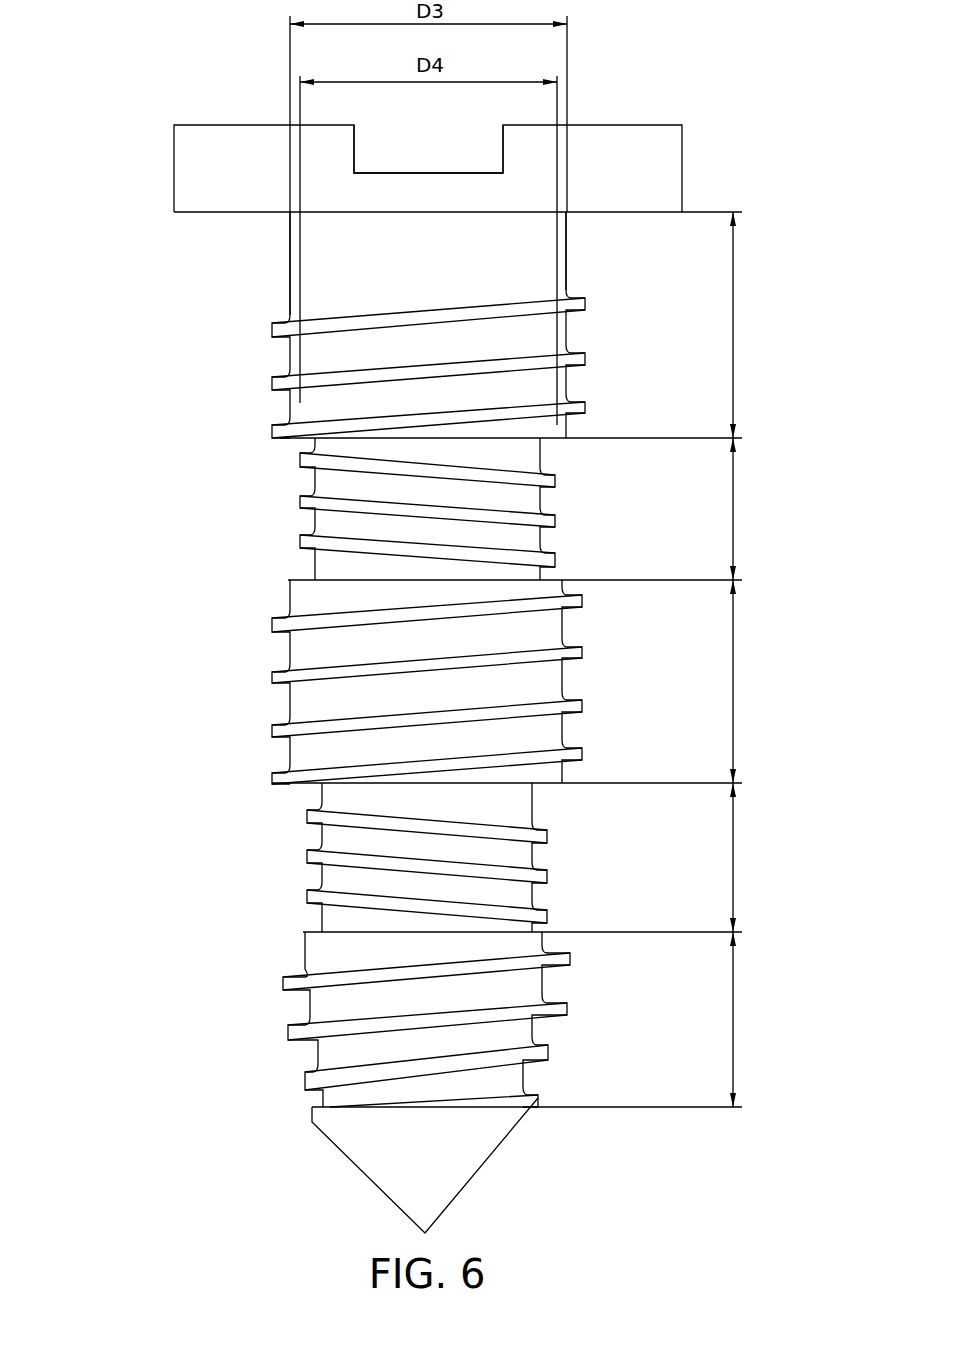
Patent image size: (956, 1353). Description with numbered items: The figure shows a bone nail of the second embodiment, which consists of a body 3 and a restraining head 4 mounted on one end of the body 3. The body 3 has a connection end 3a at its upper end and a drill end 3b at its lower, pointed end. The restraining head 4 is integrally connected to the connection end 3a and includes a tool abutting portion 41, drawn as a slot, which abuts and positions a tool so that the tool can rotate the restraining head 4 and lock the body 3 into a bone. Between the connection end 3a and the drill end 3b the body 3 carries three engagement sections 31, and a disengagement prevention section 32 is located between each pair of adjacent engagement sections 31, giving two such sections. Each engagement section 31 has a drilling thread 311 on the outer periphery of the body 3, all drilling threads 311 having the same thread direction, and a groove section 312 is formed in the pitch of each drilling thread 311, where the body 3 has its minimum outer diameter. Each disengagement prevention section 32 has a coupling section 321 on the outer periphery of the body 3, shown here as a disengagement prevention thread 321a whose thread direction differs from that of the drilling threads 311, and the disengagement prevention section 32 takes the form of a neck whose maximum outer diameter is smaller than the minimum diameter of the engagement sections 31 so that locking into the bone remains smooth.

The body 3 is at (238, 989).
The connection end 3a is at (340, 229).
The drill end 3b is at (468, 1150).
The restraining head 4 is at (622, 133).
The tool abutting portion 41 is at (466, 170).
The engagement section 31 is at (437, 659).
The disengagement prevention section 32 is at (411, 685).
The drilling thread 311 is at (275, 726).
The groove section 312 is at (290, 752).
The coupling section 321 is at (321, 857).
The disengagement prevention thread 321a is at (307, 857).